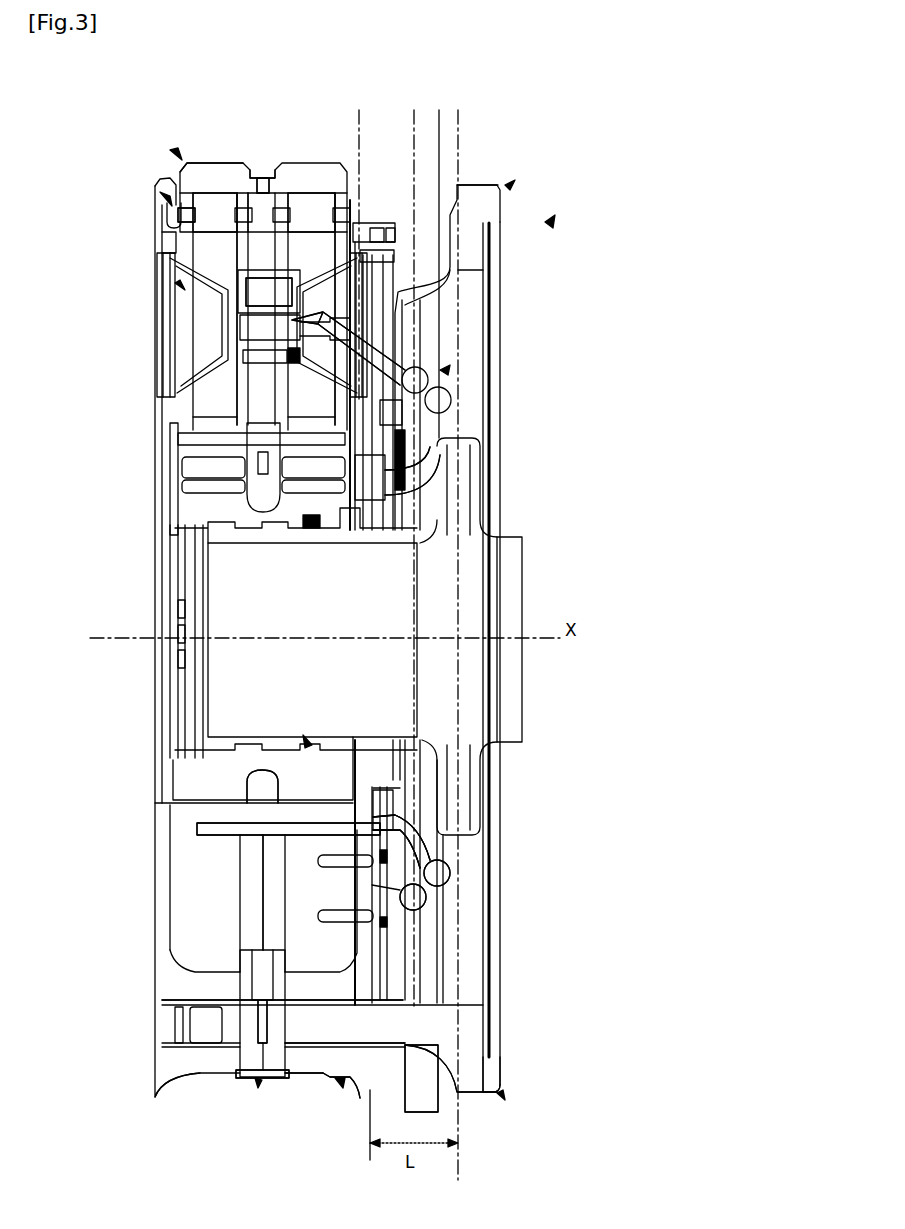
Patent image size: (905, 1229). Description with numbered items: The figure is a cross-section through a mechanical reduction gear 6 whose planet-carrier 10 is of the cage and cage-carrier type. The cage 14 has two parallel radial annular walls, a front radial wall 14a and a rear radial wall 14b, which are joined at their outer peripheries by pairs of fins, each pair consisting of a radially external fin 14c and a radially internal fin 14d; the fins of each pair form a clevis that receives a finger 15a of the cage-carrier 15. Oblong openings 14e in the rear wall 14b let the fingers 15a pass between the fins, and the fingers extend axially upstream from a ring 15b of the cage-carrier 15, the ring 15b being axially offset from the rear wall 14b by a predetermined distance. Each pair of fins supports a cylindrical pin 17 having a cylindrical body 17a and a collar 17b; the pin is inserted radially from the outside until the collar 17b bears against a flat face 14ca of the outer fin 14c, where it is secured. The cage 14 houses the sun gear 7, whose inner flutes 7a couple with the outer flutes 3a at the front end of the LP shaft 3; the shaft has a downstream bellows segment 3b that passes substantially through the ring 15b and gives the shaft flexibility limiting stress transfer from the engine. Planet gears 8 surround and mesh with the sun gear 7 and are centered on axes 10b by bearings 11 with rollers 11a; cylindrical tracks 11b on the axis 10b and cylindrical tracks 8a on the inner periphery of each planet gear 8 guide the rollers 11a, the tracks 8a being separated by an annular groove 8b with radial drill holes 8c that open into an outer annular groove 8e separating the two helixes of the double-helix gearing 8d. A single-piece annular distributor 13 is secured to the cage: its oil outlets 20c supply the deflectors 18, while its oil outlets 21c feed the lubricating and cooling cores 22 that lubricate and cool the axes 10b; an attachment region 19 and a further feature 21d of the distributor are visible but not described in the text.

The LP shaft 3 is at (293, 641).
The outer complementary flutes 3a is at (296, 705).
The inner flutes 7a is at (262, 786).
The downstream segment 3b is at (484, 720).
The reduction gear 6 is at (548, 648).
The sun gear 7 is at (264, 655).
The planet gears 8 is at (231, 333).
The cylindrical tracks 8a is at (277, 250).
The annular groove 8b is at (270, 139).
The radial drill holes 8c is at (259, 142).
The double-helix gearing 8d is at (202, 128).
The annular groove 8e is at (240, 174).
The planet-carrier 10 is at (378, 638).
The axes 10b is at (132, 246).
The bearings 11 is at (139, 199).
The rollers 11a is at (261, 169).
The cylindrical tracks 11b is at (145, 217).
The distributor 13 is at (419, 611).
The cage 14 is at (345, 1098).
The front radial wall 14a is at (227, 897).
The rear radial wall 14b is at (453, 602).
The radially external fin 14c is at (177, 1108).
The flat face 14ca is at (311, 1123).
The radially internal fin 14d is at (251, 984).
The oblong openings 14e is at (439, 1087).
The cage-carrier 15 is at (501, 1115).
The finger 15a is at (157, 1025).
The ring 15b is at (511, 163).
The cylindrical pin 17 is at (262, 1061).
The cylindrical body 17a is at (277, 1069).
The collar 17b is at (253, 1107).
The deflectors 18 is at (234, 886).
The lower lever 19 is at (460, 877).
The oil outlets 20c is at (386, 657).
The oil outlets 21c is at (191, 308).
The link arm 21d is at (423, 339).
The lubricating and cooling cores 22 is at (230, 325).